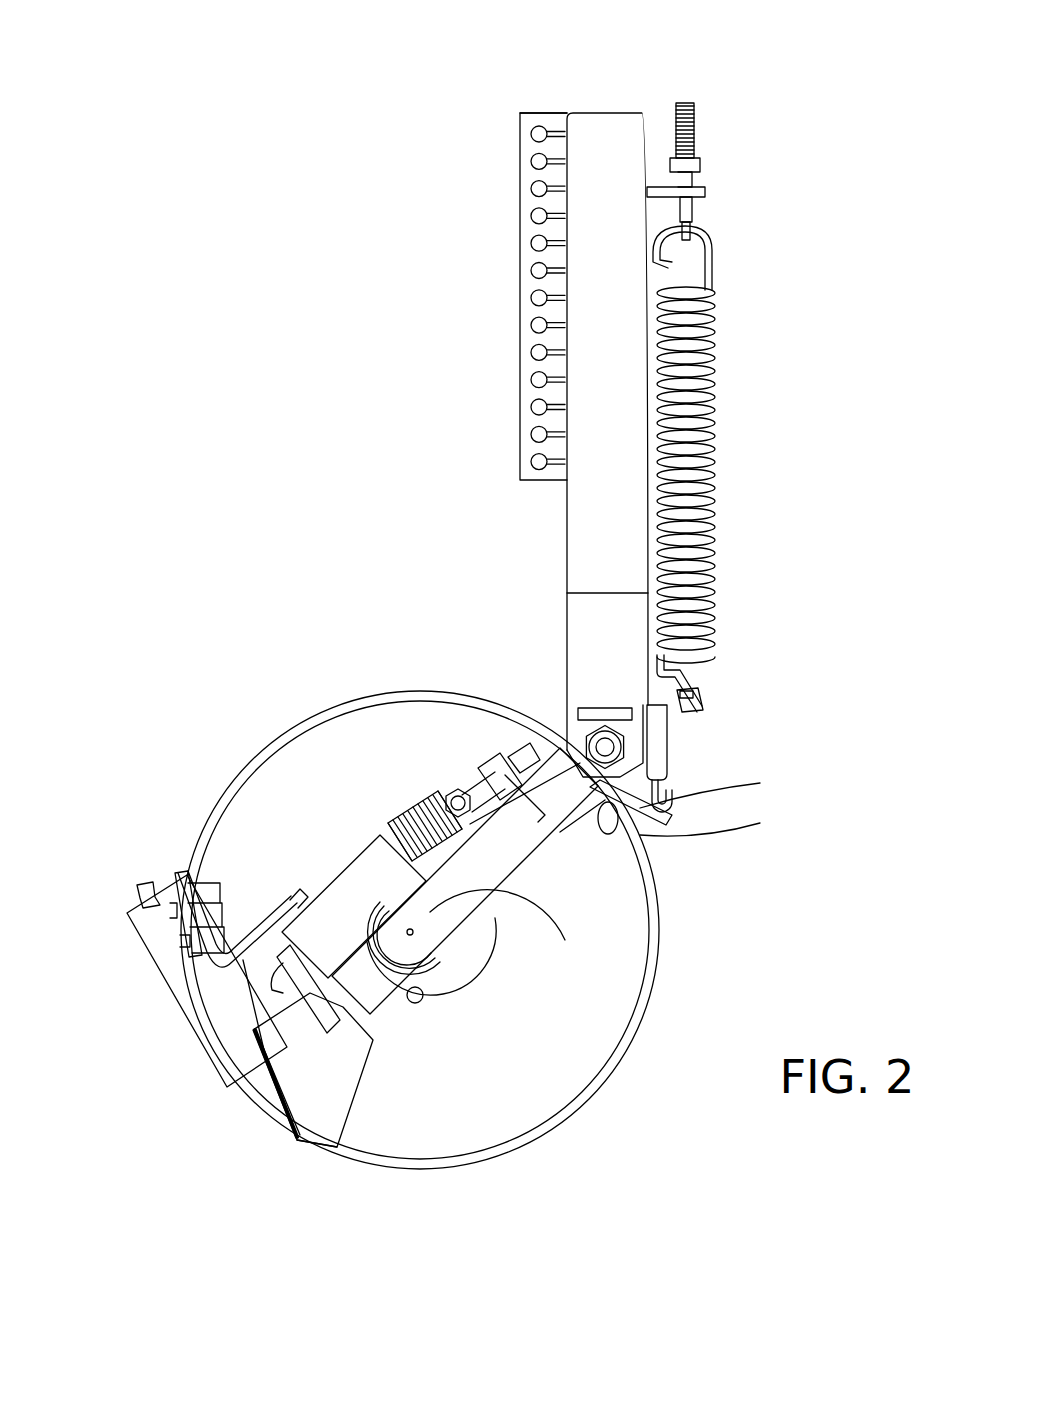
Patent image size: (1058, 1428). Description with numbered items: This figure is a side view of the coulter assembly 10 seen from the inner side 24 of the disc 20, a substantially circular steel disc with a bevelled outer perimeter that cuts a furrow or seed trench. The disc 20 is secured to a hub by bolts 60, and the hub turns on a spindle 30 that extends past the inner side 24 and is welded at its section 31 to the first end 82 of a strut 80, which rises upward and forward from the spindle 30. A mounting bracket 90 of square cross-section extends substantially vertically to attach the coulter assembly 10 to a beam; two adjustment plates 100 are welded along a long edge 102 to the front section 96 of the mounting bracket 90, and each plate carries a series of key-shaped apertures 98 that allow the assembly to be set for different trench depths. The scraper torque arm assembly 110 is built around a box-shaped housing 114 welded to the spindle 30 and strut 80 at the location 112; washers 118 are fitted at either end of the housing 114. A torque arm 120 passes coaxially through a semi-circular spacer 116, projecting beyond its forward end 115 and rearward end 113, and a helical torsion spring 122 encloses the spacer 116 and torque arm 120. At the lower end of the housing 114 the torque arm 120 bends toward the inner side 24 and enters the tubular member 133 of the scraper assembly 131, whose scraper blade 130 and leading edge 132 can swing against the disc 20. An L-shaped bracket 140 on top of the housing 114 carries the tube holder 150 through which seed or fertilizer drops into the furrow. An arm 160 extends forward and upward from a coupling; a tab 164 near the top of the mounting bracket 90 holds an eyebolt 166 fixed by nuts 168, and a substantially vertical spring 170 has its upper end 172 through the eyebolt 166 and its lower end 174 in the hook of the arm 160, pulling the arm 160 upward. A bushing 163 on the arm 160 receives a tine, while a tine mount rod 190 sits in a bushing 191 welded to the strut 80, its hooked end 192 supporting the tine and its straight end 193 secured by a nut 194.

The coulter assembly 10 is at (400, 528).
The disc 20 is at (437, 1167).
The inner side 24 is at (528, 1080).
The spindle 30 is at (430, 950).
The section of spindle 31 is at (445, 940).
The bolts 60 is at (422, 1000).
The strut 80 is at (640, 843).
The first end of strut 82 is at (482, 896).
The mounting bracket 90 is at (560, 563).
The front section 96 is at (651, 140).
The apertures 98 is at (531, 134).
The adjustment plates 100 is at (520, 220).
The long edge 102 is at (558, 134).
The scraper torque arm assembly 110 is at (330, 857).
The welding location 112 is at (333, 862).
The rearward end of spacer 113 is at (250, 1003).
The housing 114 is at (350, 930).
The forward end of spacer 115 is at (480, 783).
The spacer 116 is at (467, 787).
The washers 118 is at (345, 855).
The torque arm 120 is at (487, 768).
The torsion spring 122 is at (400, 800).
The scraper blade 130 is at (303, 1095).
The scraper assembly 131 is at (294, 1148).
The leading edge 132 is at (357, 1093).
The tubular member 133 is at (267, 1080).
The bracket 140 is at (192, 876).
The tube holder 150 is at (180, 965).
The arm 160 is at (668, 742).
The bushing 163 is at (703, 712).
The tab 164 is at (706, 190).
The eyebolt 166 is at (695, 212).
The nuts 168 is at (700, 158).
The spring 170 is at (718, 373).
The upper end of spring 172 is at (716, 265).
The lower end of spring 174 is at (692, 672).
The tine mount rod 190 is at (668, 810).
The bushing 191 is at (568, 702).
The hooked end 192 is at (674, 803).
The straight end 193 is at (540, 765).
The nut 194 is at (516, 775).